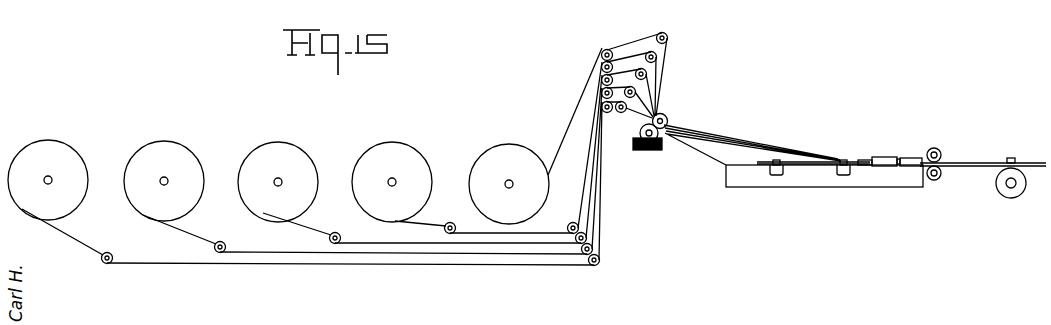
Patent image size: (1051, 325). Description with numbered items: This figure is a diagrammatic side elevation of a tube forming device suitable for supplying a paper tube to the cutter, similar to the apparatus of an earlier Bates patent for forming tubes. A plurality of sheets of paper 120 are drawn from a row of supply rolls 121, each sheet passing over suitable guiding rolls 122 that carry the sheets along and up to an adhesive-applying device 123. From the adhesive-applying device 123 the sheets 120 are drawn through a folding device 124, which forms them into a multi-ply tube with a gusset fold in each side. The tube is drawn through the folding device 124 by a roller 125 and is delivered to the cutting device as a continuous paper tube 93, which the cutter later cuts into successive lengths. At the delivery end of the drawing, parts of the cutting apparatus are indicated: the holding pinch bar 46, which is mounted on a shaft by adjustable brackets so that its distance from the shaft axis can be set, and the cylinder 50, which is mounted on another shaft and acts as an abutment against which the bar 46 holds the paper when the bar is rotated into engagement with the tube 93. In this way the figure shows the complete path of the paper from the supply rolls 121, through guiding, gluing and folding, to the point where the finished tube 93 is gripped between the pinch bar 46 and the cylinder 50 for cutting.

The sheets of paper 120 is at (74, 240).
The supply rolls 121 is at (59, 153).
The guiding rolls 122 is at (111, 265).
The adhesive-applying device 123 is at (663, 149).
The folding device 124 is at (845, 161).
The roller 125 is at (932, 148).
The paper tube 93 is at (955, 162).
The holding pinch bar 46 is at (1021, 153).
The cylinder 50 is at (999, 196).